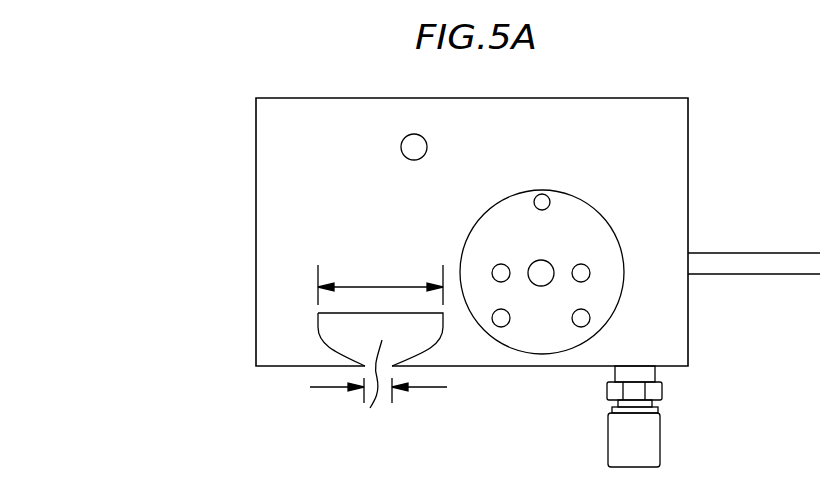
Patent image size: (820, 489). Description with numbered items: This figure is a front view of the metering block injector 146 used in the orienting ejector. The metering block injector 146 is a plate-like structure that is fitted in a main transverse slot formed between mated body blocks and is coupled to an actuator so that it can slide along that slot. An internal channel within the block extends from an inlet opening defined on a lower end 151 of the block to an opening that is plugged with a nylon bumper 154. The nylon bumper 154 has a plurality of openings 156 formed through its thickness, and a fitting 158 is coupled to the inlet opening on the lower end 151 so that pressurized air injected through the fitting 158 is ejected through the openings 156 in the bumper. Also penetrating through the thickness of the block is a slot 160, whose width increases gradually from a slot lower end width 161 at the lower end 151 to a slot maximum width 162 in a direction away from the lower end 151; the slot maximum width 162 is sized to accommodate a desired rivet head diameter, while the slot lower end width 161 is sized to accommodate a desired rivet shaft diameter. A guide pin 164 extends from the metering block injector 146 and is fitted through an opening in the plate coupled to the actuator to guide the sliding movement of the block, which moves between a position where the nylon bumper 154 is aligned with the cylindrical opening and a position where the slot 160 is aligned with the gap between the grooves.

The metering block injector 146 is at (229, 313).
The lower end 151 is at (672, 370).
The nylon bumper 154 is at (538, 323).
The openings 156 is at (547, 263).
The fitting 158 is at (643, 455).
The slot 160 is at (370, 408).
The slot lower end width 161 is at (322, 388).
The slot maximum width 162 is at (372, 287).
The guide pin 164 is at (725, 252).